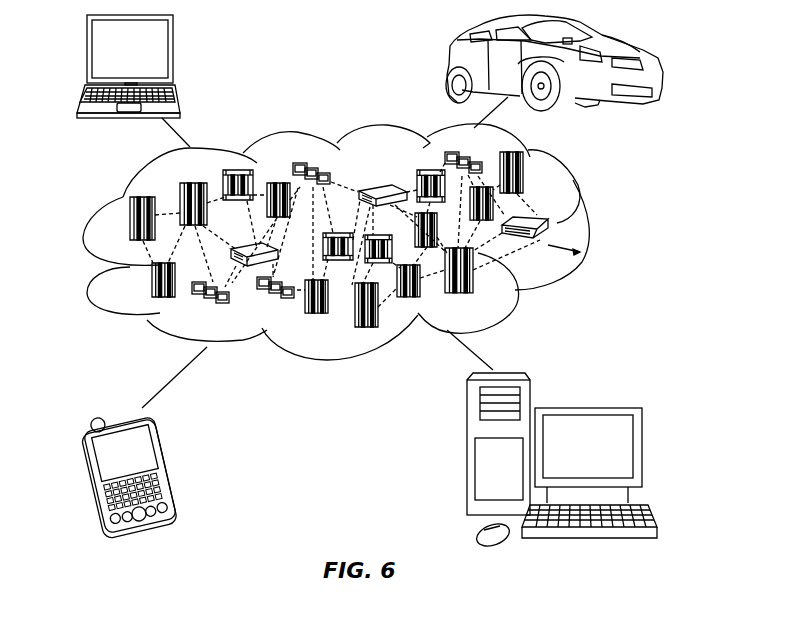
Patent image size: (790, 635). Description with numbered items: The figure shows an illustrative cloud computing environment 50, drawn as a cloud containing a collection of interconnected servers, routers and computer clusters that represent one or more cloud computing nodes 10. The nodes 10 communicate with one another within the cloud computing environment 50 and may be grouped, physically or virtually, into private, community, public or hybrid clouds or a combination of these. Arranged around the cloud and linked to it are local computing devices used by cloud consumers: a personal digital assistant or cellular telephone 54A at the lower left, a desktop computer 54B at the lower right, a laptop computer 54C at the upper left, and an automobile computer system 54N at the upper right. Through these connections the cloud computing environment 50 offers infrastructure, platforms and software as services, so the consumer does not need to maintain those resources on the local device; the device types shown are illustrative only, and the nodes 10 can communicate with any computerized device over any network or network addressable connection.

The cloud computing node 10 is at (567, 257).
The cloud computing environment 50 is at (588, 224).
The personal digital assistant or cellular telephone 54A is at (167, 465).
The desktop computer 54B is at (587, 407).
The laptop computer 54C is at (175, 53).
The automobile computer system 54N is at (448, 64).